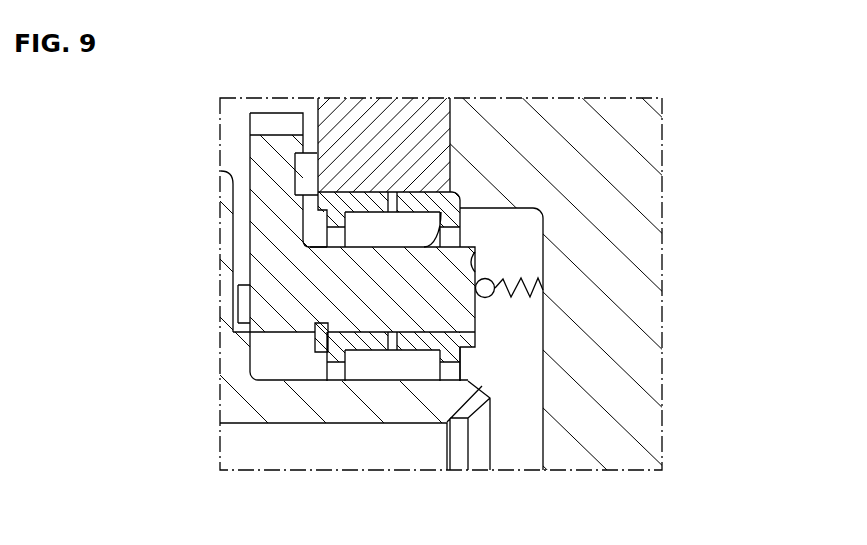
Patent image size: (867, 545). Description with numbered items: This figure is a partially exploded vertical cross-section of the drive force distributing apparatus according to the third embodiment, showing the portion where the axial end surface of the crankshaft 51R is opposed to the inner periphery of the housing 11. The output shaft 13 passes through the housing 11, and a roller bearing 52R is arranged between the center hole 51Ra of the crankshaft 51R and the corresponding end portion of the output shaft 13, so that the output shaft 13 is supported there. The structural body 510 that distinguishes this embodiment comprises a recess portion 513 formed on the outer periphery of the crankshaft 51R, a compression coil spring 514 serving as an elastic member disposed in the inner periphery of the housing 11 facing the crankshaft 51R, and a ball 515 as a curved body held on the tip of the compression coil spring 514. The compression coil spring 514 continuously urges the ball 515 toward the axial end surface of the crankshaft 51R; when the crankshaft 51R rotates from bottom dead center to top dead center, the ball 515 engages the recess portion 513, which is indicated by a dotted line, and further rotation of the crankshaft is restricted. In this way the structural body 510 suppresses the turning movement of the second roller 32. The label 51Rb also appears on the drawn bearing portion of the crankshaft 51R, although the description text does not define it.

The housing 11 is at (637, 185).
The second roller 32 is at (221, 264).
The output shaft 13 is at (386, 410).
The crankshaft 51R is at (497, 346).
The center hole of the crankshaft 51Ra is at (462, 360).
The outer ring of bearing 51Rb is at (458, 236).
The roller bearing 52R is at (358, 372).
The structural body 510 is at (649, 263).
The recess portion 513 is at (477, 258).
The ball 515 is at (492, 280).
The compression coil spring 514 is at (497, 296).